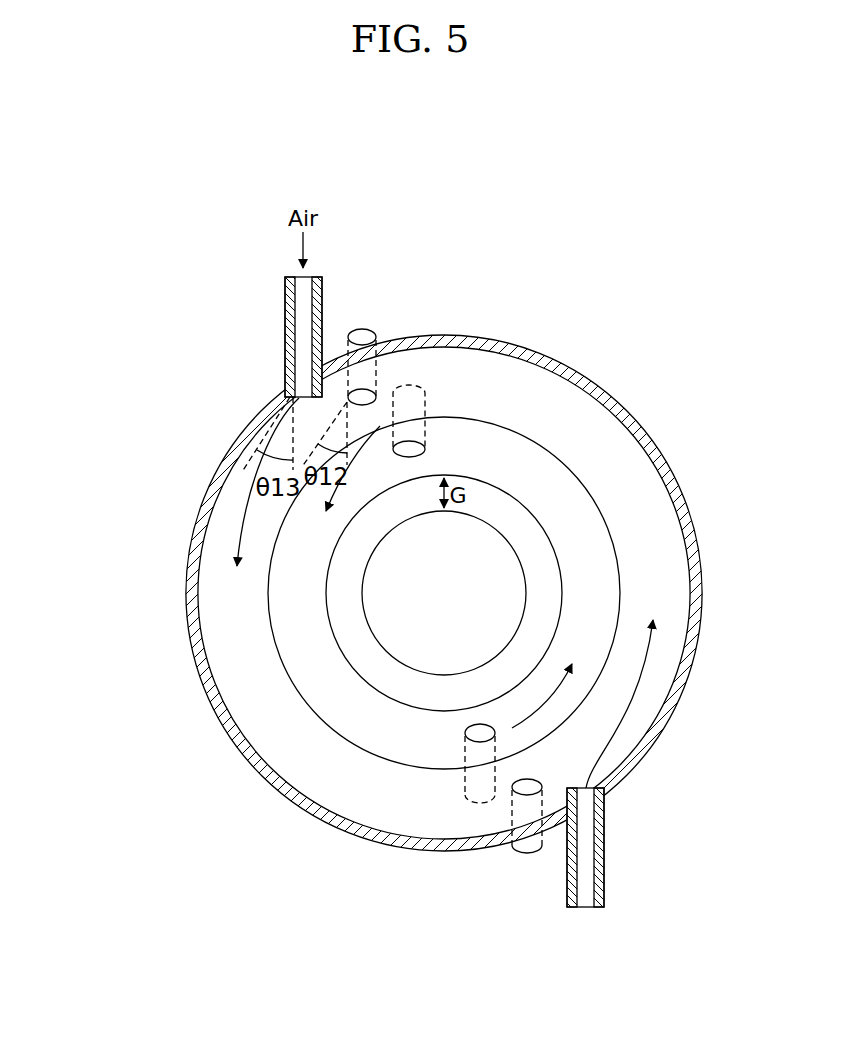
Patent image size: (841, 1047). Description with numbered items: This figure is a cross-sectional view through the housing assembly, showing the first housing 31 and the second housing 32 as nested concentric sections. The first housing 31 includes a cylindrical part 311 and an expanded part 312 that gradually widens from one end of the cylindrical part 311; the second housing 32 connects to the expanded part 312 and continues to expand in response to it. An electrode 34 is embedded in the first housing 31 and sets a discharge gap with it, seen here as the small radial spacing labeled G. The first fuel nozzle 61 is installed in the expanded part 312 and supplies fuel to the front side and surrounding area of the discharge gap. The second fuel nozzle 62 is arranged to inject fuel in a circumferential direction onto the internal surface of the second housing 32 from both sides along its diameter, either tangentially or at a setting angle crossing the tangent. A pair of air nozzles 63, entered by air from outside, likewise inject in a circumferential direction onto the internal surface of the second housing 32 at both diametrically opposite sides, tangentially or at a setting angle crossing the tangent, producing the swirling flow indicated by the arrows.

The first housing 31 is at (346, 593).
The cylindrical part 311 is at (337, 636).
The expanded part 312 is at (292, 615).
The second housing 32 is at (307, 760).
The electrode 34 is at (437, 642).
The first fuel nozzle 61 is at (409, 446).
The second fuel nozzle 62 is at (361, 330).
The air nozzle 63 is at (285, 307).